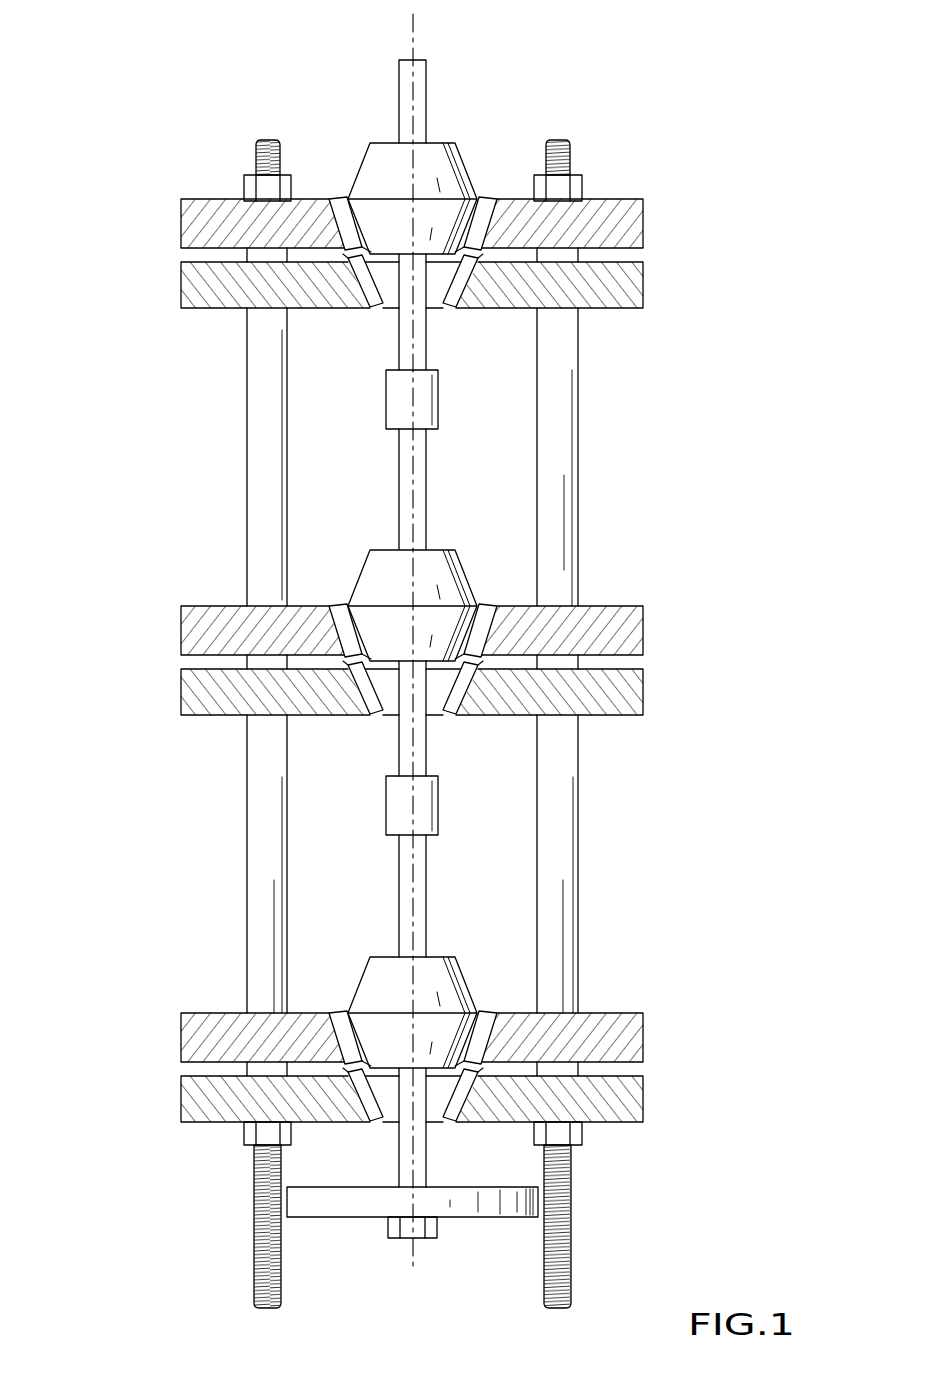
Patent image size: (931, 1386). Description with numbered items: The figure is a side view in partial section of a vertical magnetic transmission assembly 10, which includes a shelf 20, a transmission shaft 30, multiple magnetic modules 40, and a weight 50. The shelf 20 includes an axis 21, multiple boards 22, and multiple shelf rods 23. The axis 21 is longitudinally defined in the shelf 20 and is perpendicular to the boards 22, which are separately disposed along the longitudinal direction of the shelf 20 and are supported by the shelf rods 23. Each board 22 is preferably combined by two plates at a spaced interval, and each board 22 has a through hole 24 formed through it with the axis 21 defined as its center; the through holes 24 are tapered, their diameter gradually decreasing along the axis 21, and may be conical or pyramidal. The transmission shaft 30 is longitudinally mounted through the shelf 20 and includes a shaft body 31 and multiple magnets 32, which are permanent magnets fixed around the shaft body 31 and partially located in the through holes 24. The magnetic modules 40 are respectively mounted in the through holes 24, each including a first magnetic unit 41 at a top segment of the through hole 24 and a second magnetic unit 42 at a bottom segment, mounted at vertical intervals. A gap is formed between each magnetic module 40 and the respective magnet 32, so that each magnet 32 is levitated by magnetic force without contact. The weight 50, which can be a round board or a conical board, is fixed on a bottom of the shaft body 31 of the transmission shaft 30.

The vertical magnetic transmission assembly 10 is at (395, 654).
The shelf 20 is at (667, 203).
The axis 21 is at (415, 33).
The board 22 is at (650, 292).
The shelf rod 23 is at (262, 875).
The through hole 24 is at (343, 200).
The transmission shaft 30 is at (403, 635).
The shaft body 31 is at (419, 480).
The magnet 32 is at (457, 143).
The magnetic module 40 is at (480, 601).
The first magnetic unit 41 is at (488, 197).
The second magnetic unit 42 is at (450, 310).
The weight 50 is at (463, 1205).